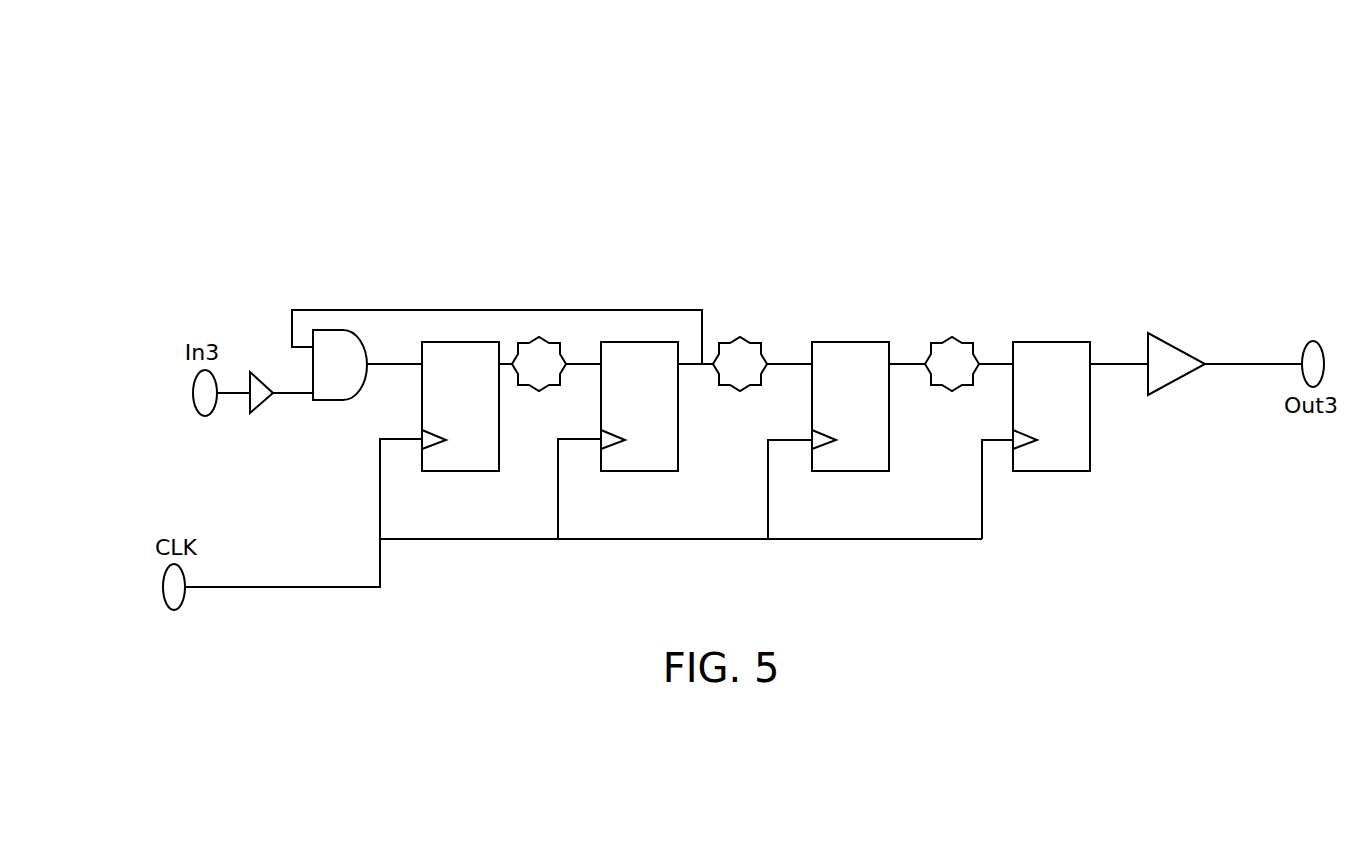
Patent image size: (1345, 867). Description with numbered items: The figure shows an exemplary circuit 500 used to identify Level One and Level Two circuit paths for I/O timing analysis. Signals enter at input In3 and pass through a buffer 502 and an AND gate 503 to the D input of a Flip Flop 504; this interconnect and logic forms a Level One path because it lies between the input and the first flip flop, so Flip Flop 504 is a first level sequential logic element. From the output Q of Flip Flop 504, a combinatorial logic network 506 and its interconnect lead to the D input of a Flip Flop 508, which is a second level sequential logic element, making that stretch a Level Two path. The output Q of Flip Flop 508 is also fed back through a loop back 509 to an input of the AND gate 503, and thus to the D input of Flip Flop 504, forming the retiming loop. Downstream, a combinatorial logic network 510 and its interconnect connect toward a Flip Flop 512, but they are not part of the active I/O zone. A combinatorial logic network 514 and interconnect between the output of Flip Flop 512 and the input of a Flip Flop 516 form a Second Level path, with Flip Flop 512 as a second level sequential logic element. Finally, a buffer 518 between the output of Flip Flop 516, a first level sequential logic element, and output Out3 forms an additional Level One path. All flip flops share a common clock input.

The circuit 500 is at (300, 218).
The buffer 502 is at (259, 372).
The AND gate 503 is at (332, 401).
The Flip Flop 504 is at (460, 471).
The combinatorial logic network 506 is at (538, 391).
The Flip Flop 508 is at (638, 471).
The loop back 509 is at (523, 310).
The combinatorial logic network 510 is at (740, 337).
The Flip Flop 512 is at (852, 342).
The combinatorial logic network 514 is at (952, 337).
The Flip Flop 516 is at (1052, 342).
The buffer 518 is at (1173, 340).